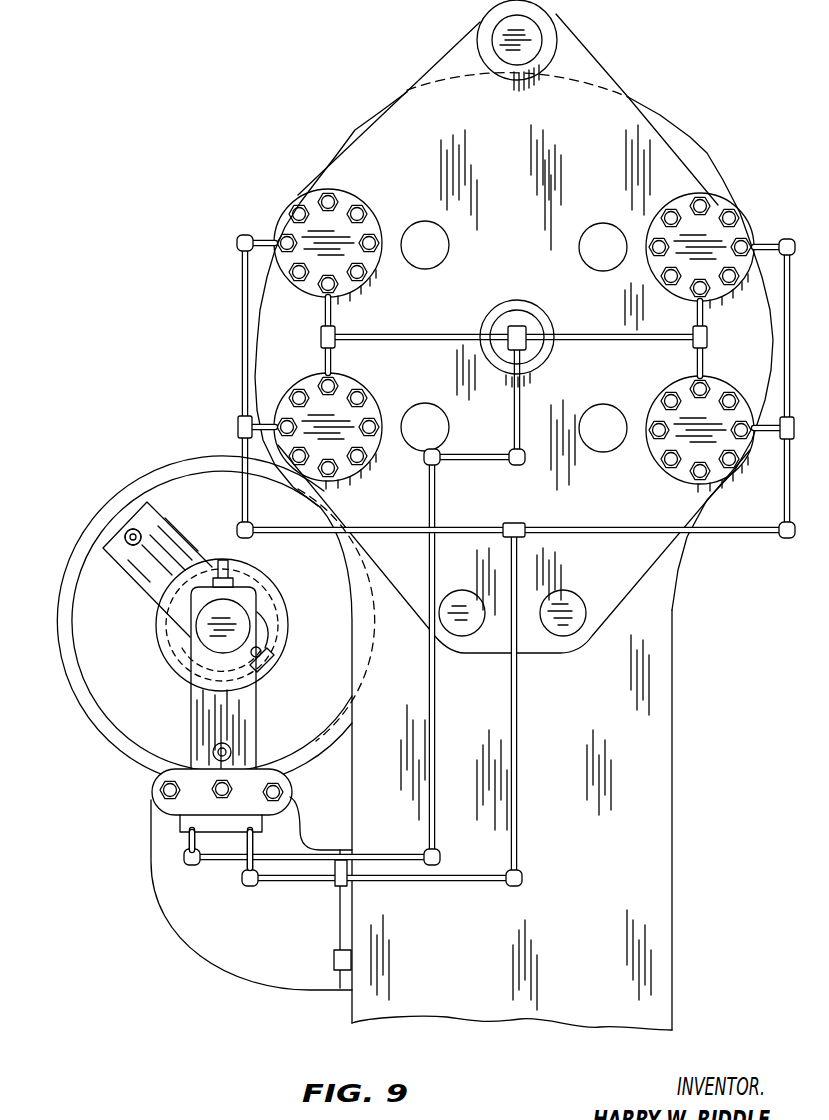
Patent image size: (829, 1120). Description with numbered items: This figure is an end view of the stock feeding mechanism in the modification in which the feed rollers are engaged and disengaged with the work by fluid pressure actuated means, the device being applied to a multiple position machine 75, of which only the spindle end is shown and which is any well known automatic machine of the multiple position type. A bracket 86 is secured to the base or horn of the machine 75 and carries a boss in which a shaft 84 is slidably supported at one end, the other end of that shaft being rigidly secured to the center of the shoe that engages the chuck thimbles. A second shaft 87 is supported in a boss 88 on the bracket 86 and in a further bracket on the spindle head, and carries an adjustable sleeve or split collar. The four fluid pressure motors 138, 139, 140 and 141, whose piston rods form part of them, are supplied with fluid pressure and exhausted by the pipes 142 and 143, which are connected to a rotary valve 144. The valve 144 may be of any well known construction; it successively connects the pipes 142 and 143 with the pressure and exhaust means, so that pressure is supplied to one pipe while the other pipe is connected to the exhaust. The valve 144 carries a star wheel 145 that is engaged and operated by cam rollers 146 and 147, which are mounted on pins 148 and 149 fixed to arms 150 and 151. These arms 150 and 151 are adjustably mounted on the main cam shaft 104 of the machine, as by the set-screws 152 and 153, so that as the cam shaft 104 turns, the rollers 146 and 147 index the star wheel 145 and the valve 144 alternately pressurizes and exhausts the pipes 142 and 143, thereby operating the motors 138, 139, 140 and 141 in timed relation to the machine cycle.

The machine 75 is at (640, 889).
The shaft 84 is at (519, 330).
The bracket 86 is at (622, 574).
The shaft 87 is at (496, 42).
The boss 88 is at (548, 48).
The main cam shaft 104 is at (208, 633).
The fluid pressure motor 138 is at (718, 208).
The fluid pressure motor 139 is at (690, 470).
The fluid pressure motor 140 is at (303, 197).
The fluid pressure motor 141 is at (347, 466).
The pipe 142 is at (434, 716).
The pipe 143 is at (516, 711).
The rotary valve 144 is at (162, 802).
The star wheel 145 is at (288, 820).
The cam roller 146 is at (262, 745).
The cam roller 147 is at (128, 530).
The pin 148 is at (215, 748).
The pin 149 is at (125, 536).
The arm 150 is at (258, 702).
The arm 151 is at (127, 567).
The set-screw 152 is at (232, 570).
The set-screw 153 is at (272, 660).